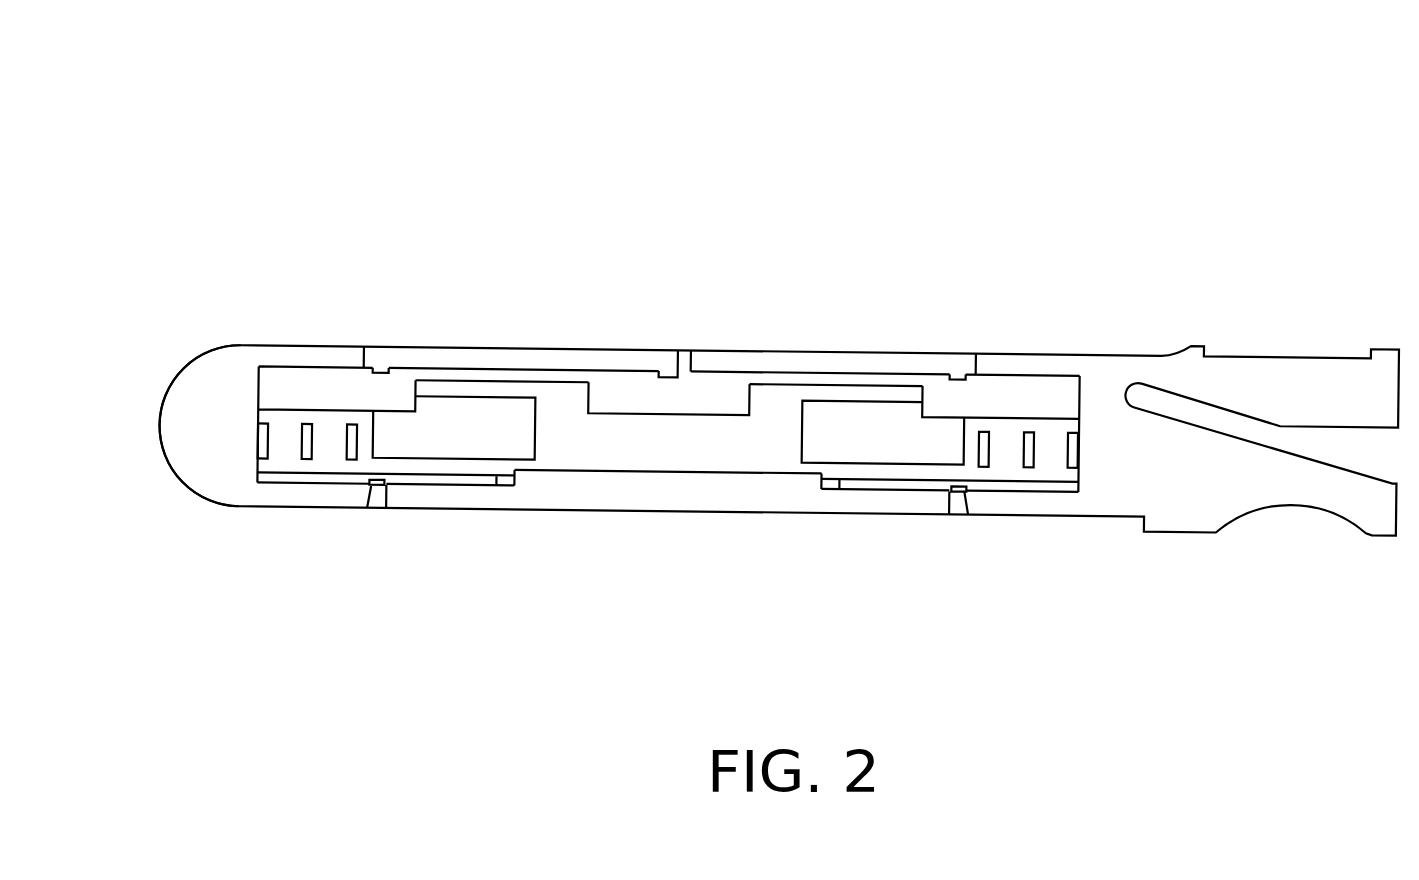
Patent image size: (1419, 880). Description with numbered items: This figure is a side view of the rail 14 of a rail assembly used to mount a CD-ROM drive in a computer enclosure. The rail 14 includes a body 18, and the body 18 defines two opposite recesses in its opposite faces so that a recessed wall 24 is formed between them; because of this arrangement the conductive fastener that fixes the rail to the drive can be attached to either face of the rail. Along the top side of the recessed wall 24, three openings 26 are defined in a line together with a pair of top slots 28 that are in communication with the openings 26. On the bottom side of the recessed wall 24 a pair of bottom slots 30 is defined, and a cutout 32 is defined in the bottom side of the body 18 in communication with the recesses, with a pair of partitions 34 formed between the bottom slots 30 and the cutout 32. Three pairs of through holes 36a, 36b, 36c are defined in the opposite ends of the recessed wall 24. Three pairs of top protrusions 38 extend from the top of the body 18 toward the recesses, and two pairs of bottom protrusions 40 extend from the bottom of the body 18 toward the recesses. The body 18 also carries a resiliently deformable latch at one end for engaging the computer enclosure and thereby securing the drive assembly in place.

The rail 14 is at (843, 87).
The body 18 is at (230, 383).
The recessed wall 24 is at (714, 437).
The openings 26 is at (309, 392).
The top slots 28 is at (495, 377).
The bottom slots 30 is at (469, 486).
The cutout 32 is at (653, 482).
The partitions 34 is at (515, 480).
The through holes 36a is at (263, 440).
The through holes 36b is at (306, 444).
The through holes 36c is at (350, 446).
The top protrusions 38 is at (374, 370).
The bottom protrusions 40 is at (368, 508).